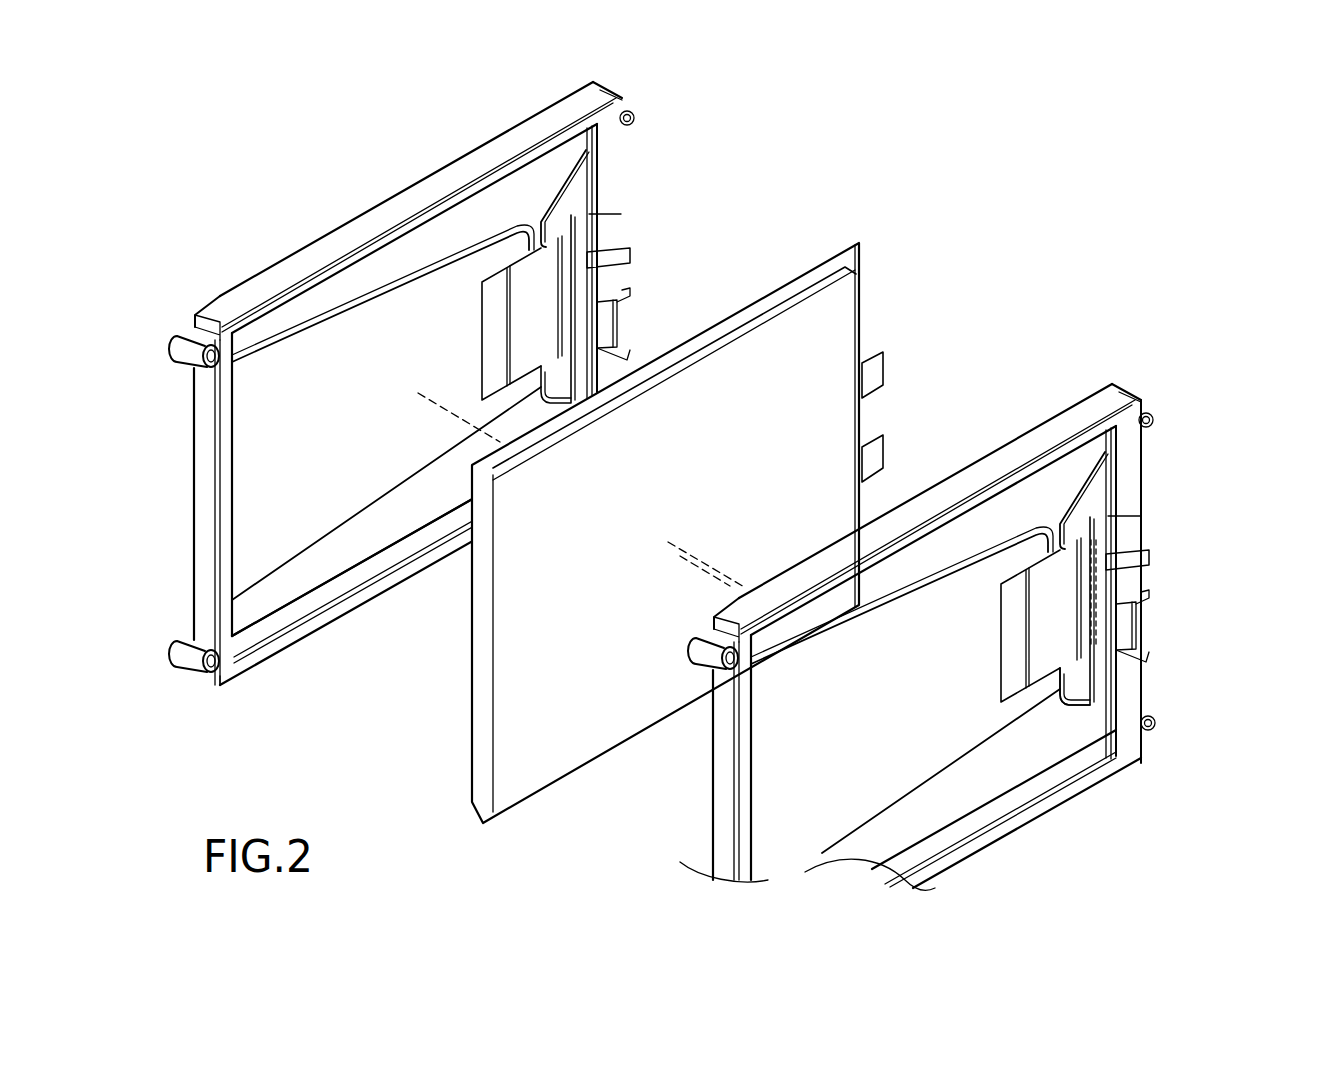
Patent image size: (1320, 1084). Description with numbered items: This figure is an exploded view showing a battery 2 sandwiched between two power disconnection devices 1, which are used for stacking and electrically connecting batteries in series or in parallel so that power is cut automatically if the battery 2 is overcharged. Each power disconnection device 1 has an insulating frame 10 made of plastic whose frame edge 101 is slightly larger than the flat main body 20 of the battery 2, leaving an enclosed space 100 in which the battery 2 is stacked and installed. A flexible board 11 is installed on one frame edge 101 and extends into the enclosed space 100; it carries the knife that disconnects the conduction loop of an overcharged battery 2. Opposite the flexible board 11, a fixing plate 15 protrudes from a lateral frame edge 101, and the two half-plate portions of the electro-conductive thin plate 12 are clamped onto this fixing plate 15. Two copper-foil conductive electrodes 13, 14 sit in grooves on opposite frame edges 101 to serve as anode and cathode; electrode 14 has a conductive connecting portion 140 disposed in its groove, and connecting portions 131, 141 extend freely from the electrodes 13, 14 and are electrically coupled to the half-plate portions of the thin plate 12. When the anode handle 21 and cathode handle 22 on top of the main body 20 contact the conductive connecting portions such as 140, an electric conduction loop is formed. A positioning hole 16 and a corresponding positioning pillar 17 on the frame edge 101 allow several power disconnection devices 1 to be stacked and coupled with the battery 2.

The power disconnection device 1 is at (696, 490).
The battery 2 is at (710, 491).
The insulating frame 10 is at (262, 290).
The flexible board 11 is at (367, 343).
The electro-conductive thin plate 12 is at (503, 283).
The conductive electrode 13 is at (626, 222).
The connecting portion 131 is at (580, 283).
The conductive electrode 14 is at (1130, 589).
The conductive connecting portion 140 is at (1120, 587).
The connecting portion 141 is at (1097, 542).
The fixing plate 15 is at (562, 200).
The positioning hole 16 is at (210, 373).
The positioning pillar 17 is at (667, 647).
The main body 20 is at (830, 327).
The anode handle 21 is at (873, 370).
The cathode handle 22 is at (875, 453).
The enclosed space 100 is at (340, 553).
The frame edge 101 is at (1010, 683).